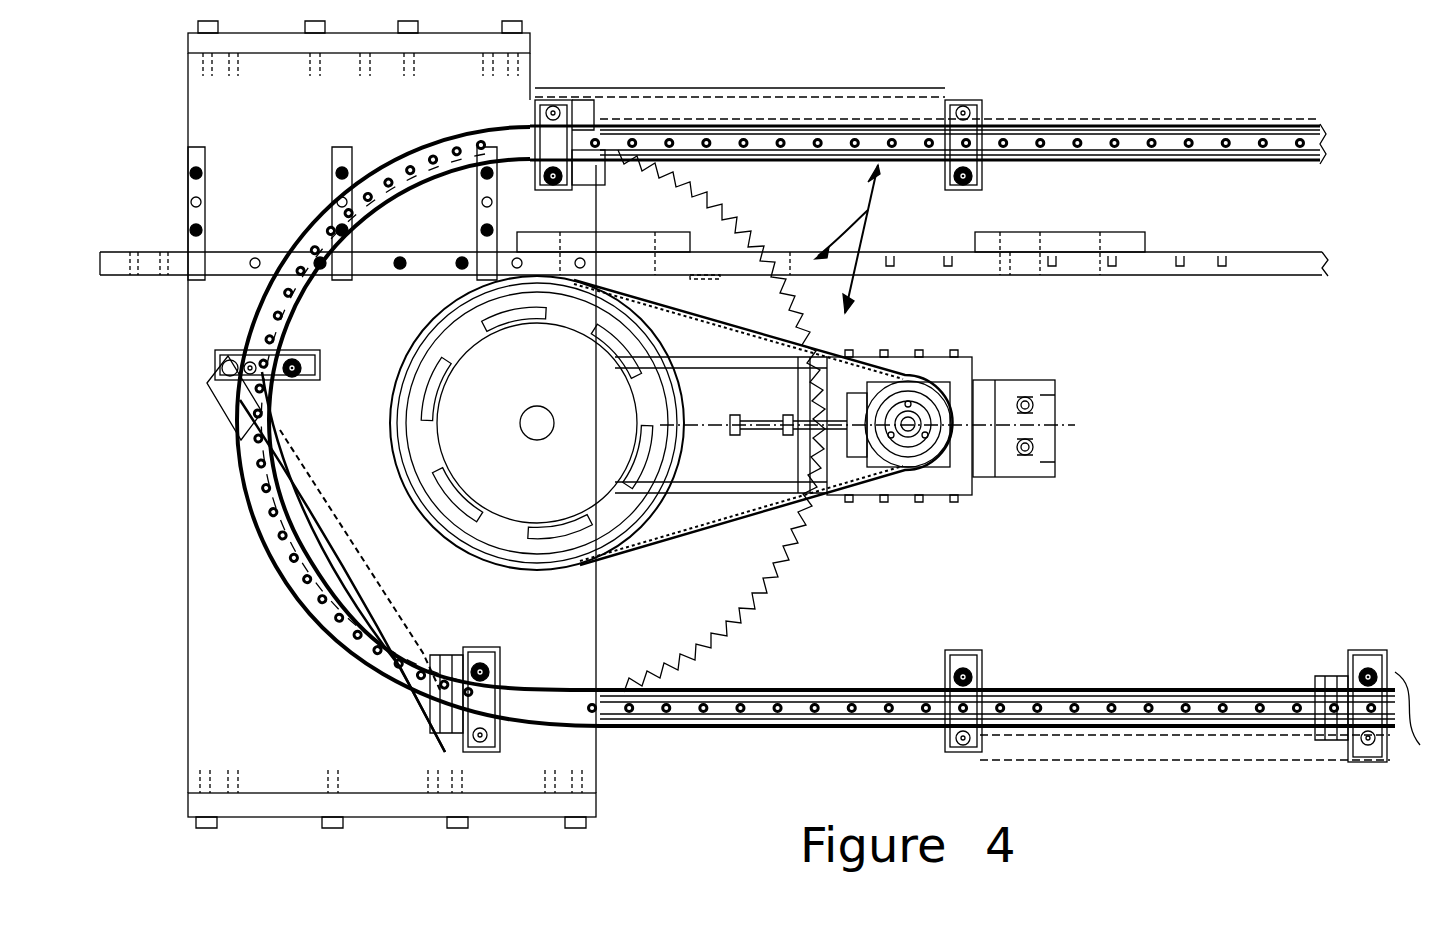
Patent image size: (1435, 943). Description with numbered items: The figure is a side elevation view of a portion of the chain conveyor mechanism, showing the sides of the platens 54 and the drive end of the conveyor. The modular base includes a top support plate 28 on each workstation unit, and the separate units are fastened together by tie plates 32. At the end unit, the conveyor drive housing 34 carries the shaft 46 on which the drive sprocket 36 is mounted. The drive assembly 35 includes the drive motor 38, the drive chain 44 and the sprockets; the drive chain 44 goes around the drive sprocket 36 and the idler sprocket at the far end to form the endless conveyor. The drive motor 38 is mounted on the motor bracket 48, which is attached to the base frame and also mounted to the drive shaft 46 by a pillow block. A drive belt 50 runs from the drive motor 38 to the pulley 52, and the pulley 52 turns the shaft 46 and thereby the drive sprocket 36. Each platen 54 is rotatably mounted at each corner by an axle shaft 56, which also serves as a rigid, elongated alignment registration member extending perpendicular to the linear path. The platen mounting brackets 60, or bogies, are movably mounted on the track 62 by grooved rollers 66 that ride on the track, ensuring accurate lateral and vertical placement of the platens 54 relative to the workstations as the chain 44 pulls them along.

The top support plate 28 is at (1238, 254).
The tie plates 32 is at (1075, 232).
The conveyor drive housing 34 is at (458, 83).
The drive assembly 35 is at (866, 211).
The drive sprocket 36 is at (748, 605).
The drive motor 38 is at (958, 378).
The drive chain 44 is at (1012, 142).
The shaft 46 is at (530, 432).
The motor bracket 48 is at (1005, 470).
The drive belt 50 is at (730, 525).
The pulley 52 is at (435, 498).
The platens 54 is at (848, 92).
The axle shaft 56 is at (968, 130).
The platen mounting brackets 60 is at (972, 182).
The track 62 is at (1165, 122).
The rollers 66 is at (300, 360).